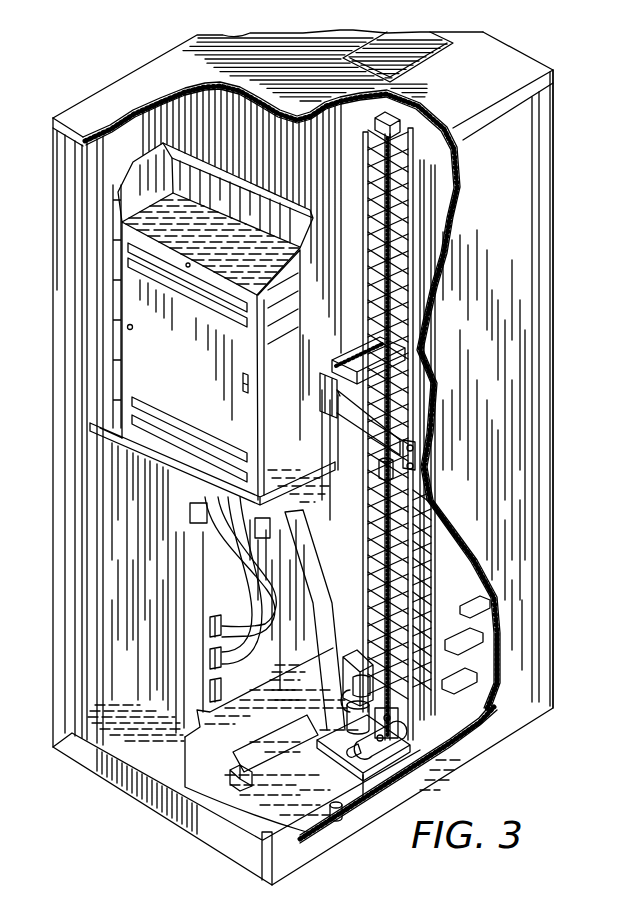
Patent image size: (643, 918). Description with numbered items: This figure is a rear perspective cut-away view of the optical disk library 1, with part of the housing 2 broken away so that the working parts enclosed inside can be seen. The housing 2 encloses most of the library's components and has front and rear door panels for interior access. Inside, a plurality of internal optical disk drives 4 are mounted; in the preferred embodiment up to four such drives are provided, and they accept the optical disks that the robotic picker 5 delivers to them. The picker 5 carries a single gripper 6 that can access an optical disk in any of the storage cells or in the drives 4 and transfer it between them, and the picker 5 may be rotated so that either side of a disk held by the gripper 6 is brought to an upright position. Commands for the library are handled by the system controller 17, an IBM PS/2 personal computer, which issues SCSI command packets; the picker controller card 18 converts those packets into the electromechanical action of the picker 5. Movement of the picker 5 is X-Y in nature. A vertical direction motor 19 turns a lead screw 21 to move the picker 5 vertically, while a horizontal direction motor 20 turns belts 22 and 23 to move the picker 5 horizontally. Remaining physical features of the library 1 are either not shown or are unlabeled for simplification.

The library 1 is at (570, 232).
The housing 2 is at (550, 70).
The optical disk drives 4 is at (455, 630).
The robotic picker 5 is at (438, 422).
The gripper 6 is at (332, 352).
The system controller 17 is at (172, 377).
The picker controller card 18 is at (207, 688).
The vertical direction motor 19 is at (300, 748).
The horizontal direction motor 20 is at (428, 757).
The lead screw 21 is at (418, 441).
The belt 22 is at (425, 436).
The belt 23 is at (372, 390).